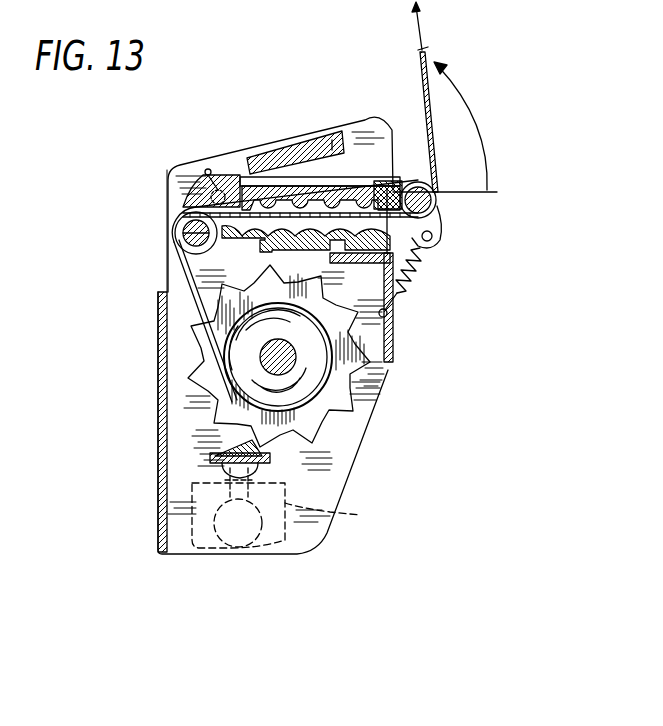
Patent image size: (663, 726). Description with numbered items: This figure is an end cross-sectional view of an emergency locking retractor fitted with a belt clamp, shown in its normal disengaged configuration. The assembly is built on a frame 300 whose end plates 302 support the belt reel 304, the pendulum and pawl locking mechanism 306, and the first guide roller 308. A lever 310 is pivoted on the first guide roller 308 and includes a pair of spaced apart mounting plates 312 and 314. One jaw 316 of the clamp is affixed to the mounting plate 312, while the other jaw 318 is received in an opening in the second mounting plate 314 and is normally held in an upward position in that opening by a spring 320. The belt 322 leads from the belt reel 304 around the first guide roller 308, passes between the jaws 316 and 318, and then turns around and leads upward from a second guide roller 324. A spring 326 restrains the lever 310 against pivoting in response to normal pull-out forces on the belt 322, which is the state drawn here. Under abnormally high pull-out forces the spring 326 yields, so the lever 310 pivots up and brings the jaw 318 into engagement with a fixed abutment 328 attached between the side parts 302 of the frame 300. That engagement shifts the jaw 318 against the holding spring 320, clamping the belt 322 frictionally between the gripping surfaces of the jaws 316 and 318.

The frame 300 is at (380, 427).
The end plates 302 is at (386, 387).
The belt reel 304 is at (266, 356).
The pendulum and pawl locking mechanism 306 is at (340, 520).
The first guide roller 308 is at (186, 224).
The lever 310 is at (406, 177).
The mounting plate 312 is at (410, 266).
The mounting plate 314 is at (374, 186).
The jaw 316 is at (440, 232).
The jaw 318 is at (318, 190).
The spring 320 is at (232, 204).
The belt 322 is at (192, 272).
The second guide roller 324 is at (432, 212).
The spring 326 is at (405, 294).
The fixed abutment 328 is at (332, 140).